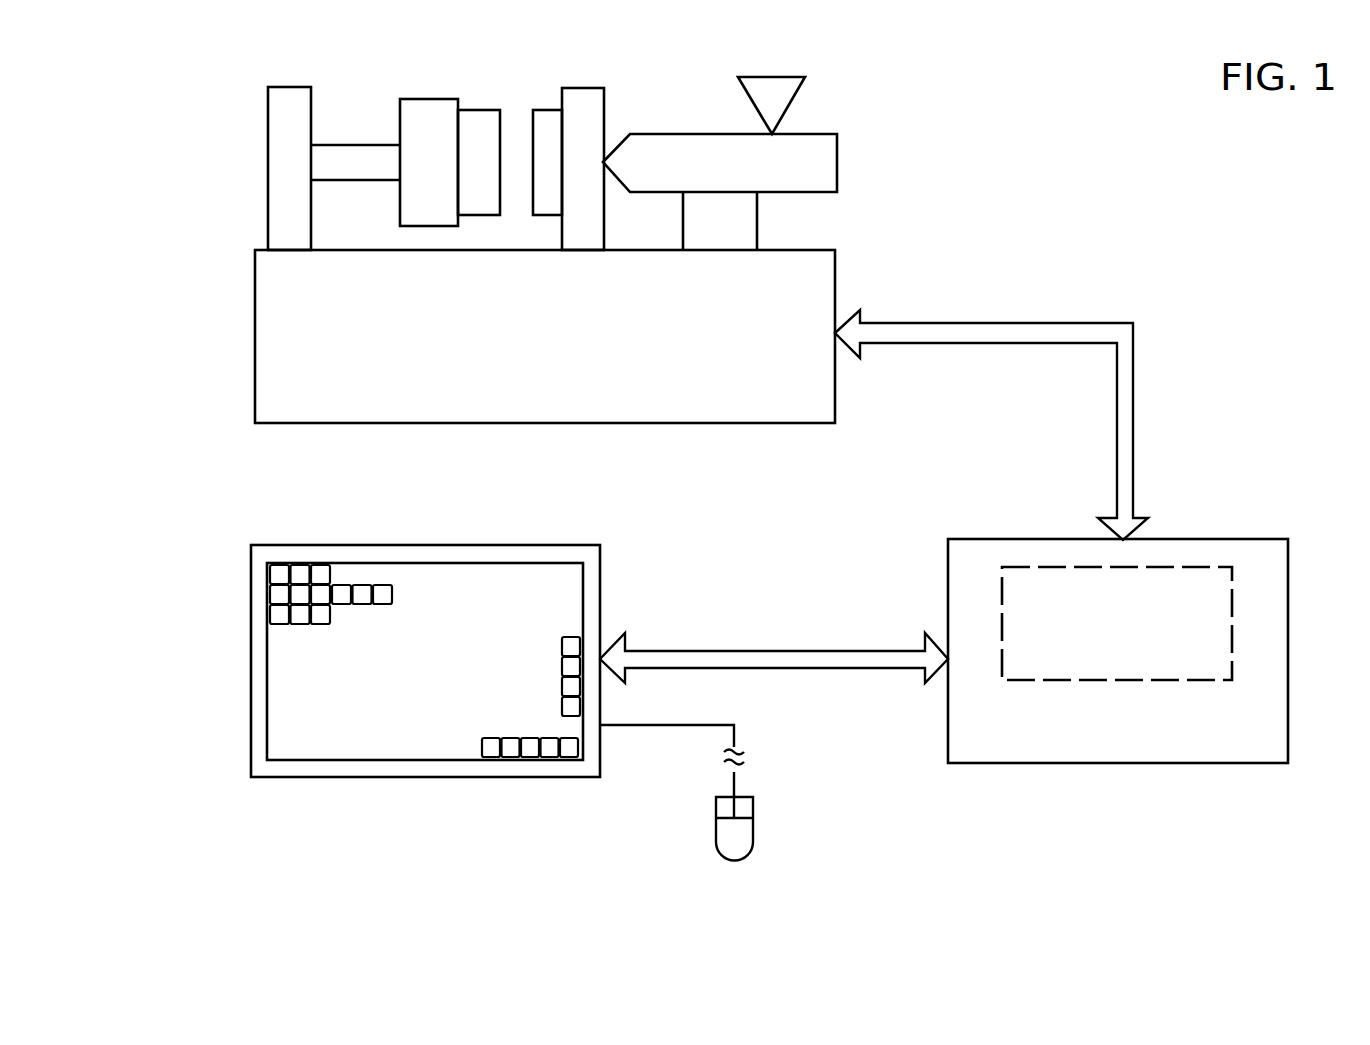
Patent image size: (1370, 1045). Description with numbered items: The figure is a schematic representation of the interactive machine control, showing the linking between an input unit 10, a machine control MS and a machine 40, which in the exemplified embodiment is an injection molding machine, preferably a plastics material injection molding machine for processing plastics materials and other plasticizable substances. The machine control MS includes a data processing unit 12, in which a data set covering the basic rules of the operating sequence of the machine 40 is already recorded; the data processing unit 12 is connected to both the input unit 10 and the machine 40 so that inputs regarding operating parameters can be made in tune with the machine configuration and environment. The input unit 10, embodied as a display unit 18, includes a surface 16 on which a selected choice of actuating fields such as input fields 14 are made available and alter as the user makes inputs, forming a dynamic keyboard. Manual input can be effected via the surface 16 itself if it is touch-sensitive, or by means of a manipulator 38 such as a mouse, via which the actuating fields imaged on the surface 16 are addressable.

The machine 40 is at (254, 281).
The input unit 10 is at (424, 770).
The data processing unit 12 is at (1188, 592).
The input field 14 is at (303, 596).
The touch-sensitive surface 16 is at (268, 693).
The display unit 18 is at (276, 777).
The manipulator 38 is at (747, 837).
The machine control MS is at (1170, 767).